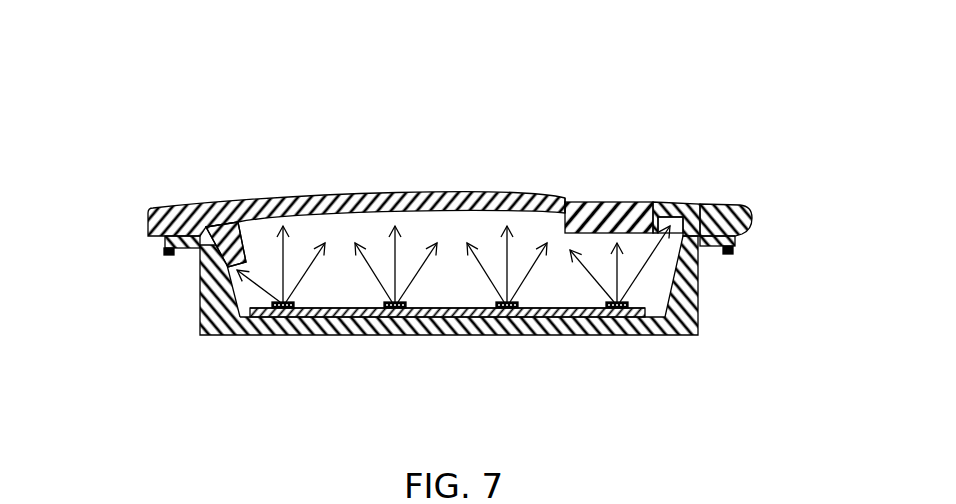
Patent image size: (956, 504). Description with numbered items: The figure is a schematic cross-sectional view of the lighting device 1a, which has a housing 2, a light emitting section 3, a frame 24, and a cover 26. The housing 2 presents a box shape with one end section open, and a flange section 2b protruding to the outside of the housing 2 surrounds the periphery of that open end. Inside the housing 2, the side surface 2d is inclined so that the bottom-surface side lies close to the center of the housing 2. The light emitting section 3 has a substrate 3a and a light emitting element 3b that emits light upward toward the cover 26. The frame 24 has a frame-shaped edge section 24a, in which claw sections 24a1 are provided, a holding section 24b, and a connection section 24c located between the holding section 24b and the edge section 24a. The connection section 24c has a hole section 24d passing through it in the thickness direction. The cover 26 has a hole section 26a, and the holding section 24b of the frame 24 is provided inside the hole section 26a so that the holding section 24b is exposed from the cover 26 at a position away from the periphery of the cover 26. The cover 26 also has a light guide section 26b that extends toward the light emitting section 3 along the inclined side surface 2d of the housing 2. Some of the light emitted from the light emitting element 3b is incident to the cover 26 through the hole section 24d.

The lighting device 1a is at (724, 92).
The housing 2 is at (694, 340).
The flange section 2b is at (186, 245).
The side surface 2d is at (238, 296).
The light emitting section 3 is at (390, 320).
The substrate 3a is at (441, 310).
The light emitting element 3b is at (504, 309).
The frame 24 is at (749, 197).
The edge section 24a is at (738, 229).
The claw section 24a1 is at (731, 255).
The holding section 24b is at (634, 212).
The connection section 24c is at (703, 222).
The hole section 24d is at (670, 232).
The cover 26 is at (414, 202).
The hole section 26a is at (572, 205).
The light guide section 26b is at (226, 243).